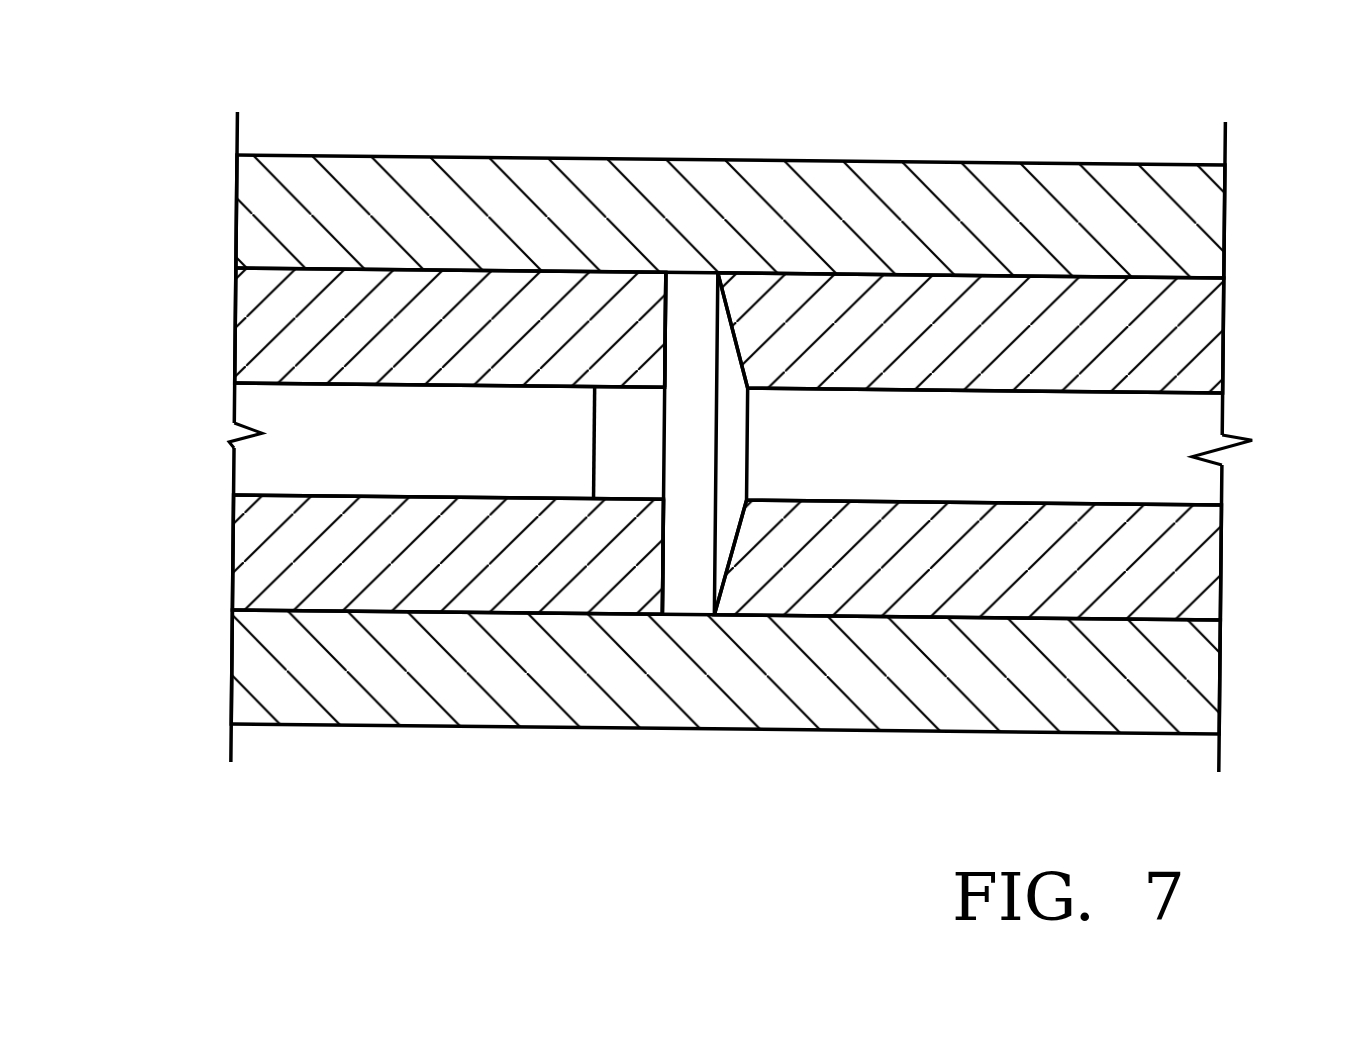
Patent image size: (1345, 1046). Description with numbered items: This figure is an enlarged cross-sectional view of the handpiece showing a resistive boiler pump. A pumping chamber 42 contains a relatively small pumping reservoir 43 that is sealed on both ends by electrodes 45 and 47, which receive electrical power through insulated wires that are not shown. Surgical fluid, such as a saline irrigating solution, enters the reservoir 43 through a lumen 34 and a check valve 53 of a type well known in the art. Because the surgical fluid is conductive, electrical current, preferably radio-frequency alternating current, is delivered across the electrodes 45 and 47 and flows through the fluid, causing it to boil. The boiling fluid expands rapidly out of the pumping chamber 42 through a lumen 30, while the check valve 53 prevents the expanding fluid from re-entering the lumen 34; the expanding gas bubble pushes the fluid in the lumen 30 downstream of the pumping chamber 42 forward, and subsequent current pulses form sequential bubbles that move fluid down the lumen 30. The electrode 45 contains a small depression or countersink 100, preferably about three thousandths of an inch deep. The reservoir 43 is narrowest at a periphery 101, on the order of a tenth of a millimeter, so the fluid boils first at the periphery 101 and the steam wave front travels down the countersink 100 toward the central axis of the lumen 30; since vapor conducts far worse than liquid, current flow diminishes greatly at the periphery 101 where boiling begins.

The pumping chamber 42 is at (862, 126).
The electrode 47 is at (237, 318).
The electrode 45 is at (1228, 318).
The countersink 100 is at (738, 425).
The pumping reservoir 43 is at (712, 459).
The periphery 101 is at (690, 290).
The lumen 34 is at (360, 453).
The check valve 53 is at (597, 448).
The lumen 30 is at (1008, 460).